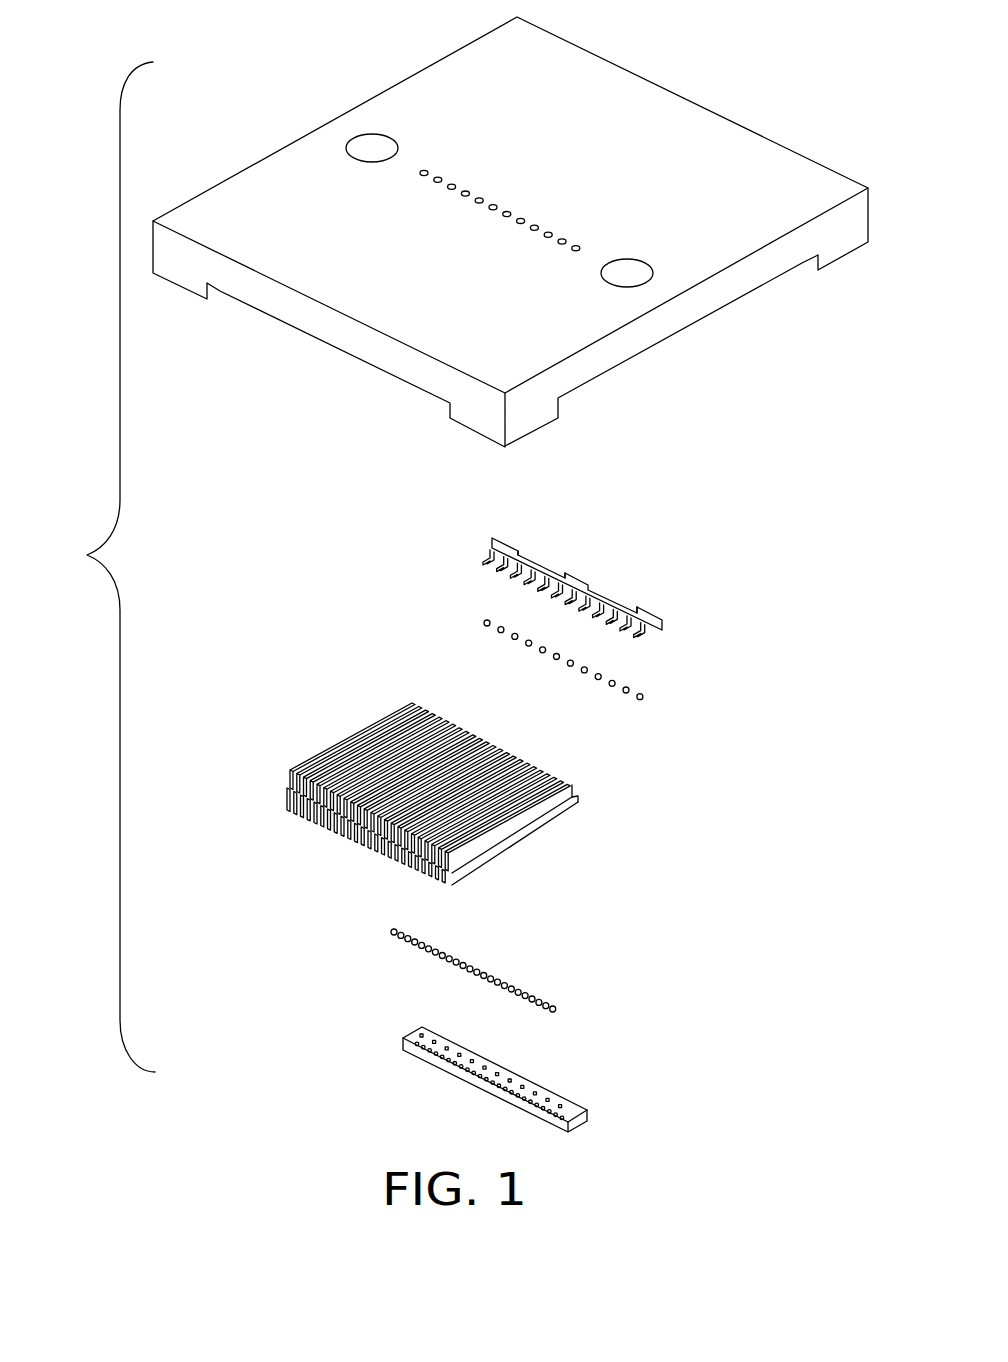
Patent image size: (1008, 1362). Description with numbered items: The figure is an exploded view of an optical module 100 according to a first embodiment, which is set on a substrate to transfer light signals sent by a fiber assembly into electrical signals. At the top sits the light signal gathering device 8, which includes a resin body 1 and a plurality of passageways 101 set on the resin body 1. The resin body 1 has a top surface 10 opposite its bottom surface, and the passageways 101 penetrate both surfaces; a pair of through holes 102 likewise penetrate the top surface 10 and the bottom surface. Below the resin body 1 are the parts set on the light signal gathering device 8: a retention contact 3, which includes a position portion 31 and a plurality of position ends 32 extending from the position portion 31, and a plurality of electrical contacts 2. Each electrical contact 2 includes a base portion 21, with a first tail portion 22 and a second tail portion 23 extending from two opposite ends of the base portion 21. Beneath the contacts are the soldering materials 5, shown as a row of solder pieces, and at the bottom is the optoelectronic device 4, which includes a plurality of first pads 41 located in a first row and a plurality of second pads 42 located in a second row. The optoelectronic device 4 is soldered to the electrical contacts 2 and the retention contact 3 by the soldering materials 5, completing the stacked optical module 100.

The optical module 100 is at (95, 567).
The light signal gathering device 8 is at (312, 100).
The resin body 1 is at (510, 232).
The top surface 10 is at (702, 142).
The passageways 101 is at (423, 170).
The through holes 102 is at (628, 275).
The retention contact 3 is at (478, 542).
The position portion 31 is at (507, 548).
The position ends 32 is at (652, 642).
The electrical contacts 2 is at (345, 725).
The base portion 21 is at (523, 823).
The first tail portion 22 is at (575, 795).
The second tail portion 23 is at (452, 877).
The soldering materials 5 is at (377, 920).
The optoelectronic device 4 is at (398, 1020).
The first pads 41 is at (580, 1107).
The second pads 42 is at (553, 1110).